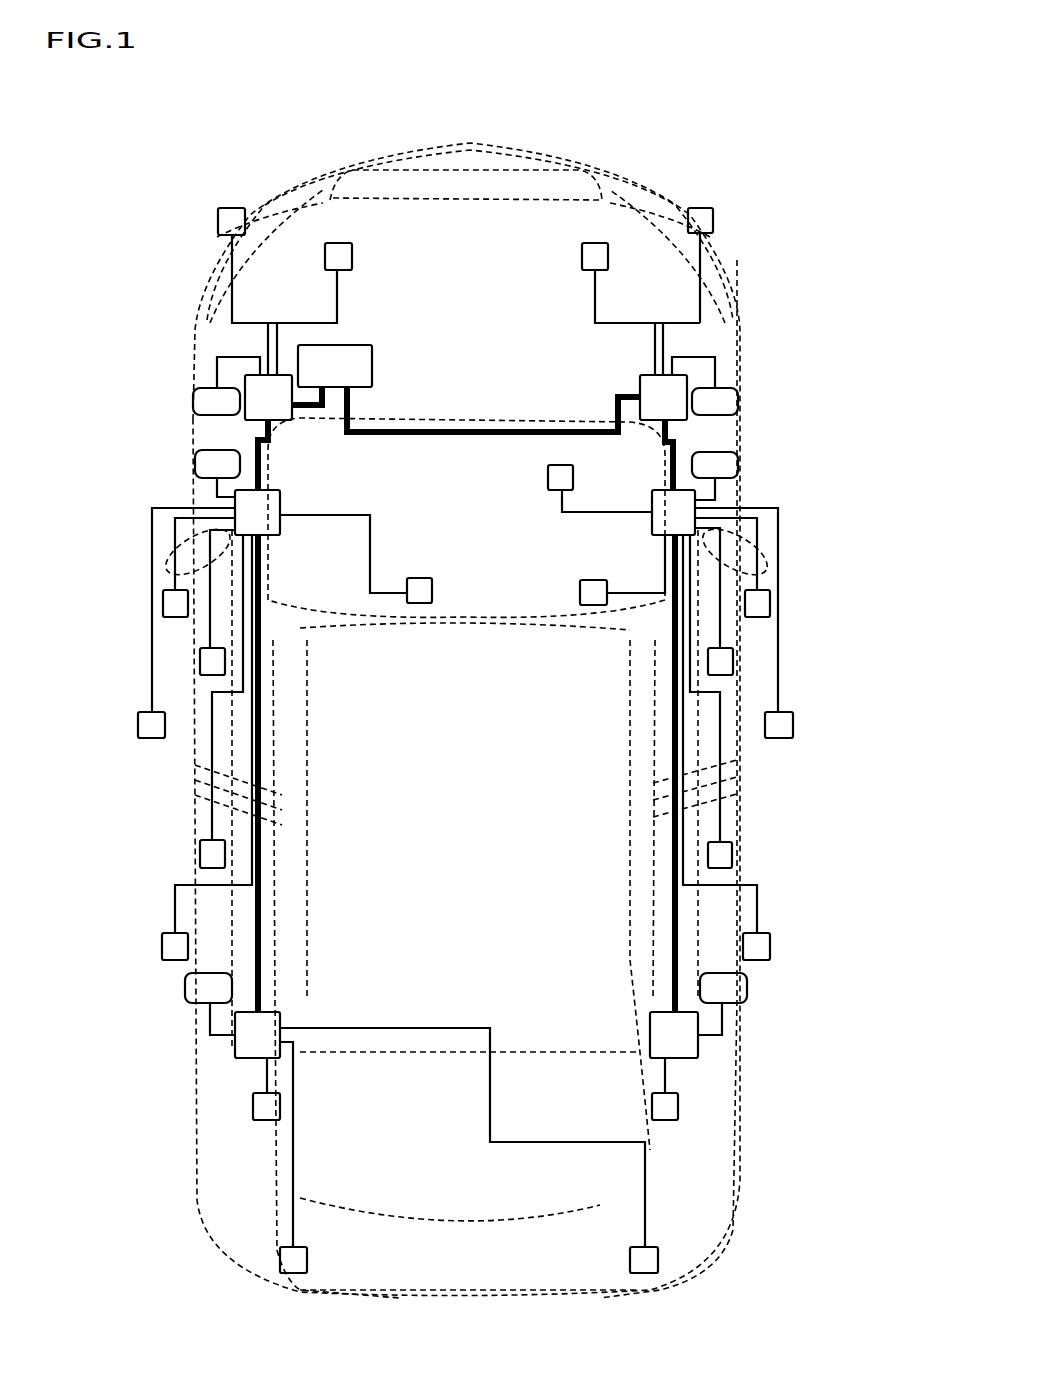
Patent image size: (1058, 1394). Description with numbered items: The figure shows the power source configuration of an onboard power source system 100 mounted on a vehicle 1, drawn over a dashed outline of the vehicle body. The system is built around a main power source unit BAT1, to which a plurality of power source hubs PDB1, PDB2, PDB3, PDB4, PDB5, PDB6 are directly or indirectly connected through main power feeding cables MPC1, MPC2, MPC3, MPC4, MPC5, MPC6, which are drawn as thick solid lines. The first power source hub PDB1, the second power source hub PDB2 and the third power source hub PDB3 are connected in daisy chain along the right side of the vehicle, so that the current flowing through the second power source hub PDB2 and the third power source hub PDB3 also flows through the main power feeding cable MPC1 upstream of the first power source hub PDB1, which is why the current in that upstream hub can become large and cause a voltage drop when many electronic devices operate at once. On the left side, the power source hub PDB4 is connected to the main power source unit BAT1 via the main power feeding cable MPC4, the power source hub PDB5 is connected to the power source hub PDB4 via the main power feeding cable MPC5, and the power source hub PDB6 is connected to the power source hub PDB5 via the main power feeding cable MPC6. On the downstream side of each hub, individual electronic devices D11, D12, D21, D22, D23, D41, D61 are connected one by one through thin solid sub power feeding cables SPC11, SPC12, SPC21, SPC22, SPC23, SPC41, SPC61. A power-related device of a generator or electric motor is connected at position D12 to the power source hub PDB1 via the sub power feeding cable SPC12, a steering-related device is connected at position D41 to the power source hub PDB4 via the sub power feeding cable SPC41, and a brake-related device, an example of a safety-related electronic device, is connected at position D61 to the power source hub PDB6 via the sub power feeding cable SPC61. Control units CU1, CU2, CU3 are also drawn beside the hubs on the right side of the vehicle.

The onboard power source system 100 is at (660, 122).
The vehicle 1 is at (160, 213).
The main power source unit BAT1 is at (412, 345).
The first power source hub PDB1 is at (640, 378).
The second power source hub PDB2 is at (652, 525).
The third power source hub PDB3 is at (700, 1055).
The power source hub PDB4 is at (250, 424).
The power source hub PDB5 is at (280, 522).
The power source hub PDB6 is at (238, 1048).
The main power feeding cable MPC1 is at (610, 424).
The main power feeding cable MPC2 is at (683, 445).
The main power feeding cable MPC3 is at (670, 880).
The main power feeding cable MPC4 is at (300, 430).
The main power feeding cable MPC5 is at (187, 488).
The main power feeding cable MPC6 is at (262, 748).
The control unit CU1 is at (778, 382).
The control unit CU2 is at (738, 468).
The control unit CU3 is at (747, 988).
The electronic device D11 is at (745, 190).
The electronic device D12 is at (582, 255).
The electronic device D21 is at (580, 592).
The electronic device D22 is at (548, 478).
The electronic device D23 is at (735, 660).
The electronic device D41 is at (352, 257).
The electronic device D61 is at (253, 1118).
The sub power feeding cable SPC11 is at (760, 245).
The sub power feeding cable SPC12 is at (593, 297).
The sub power feeding cable SPC21 is at (625, 600).
The sub power feeding cable SPC22 is at (560, 508).
The sub power feeding cable SPC23 is at (820, 565).
The sub power feeding cable SPC41 is at (293, 320).
The sub power feeding cable SPC61 is at (296, 1142).